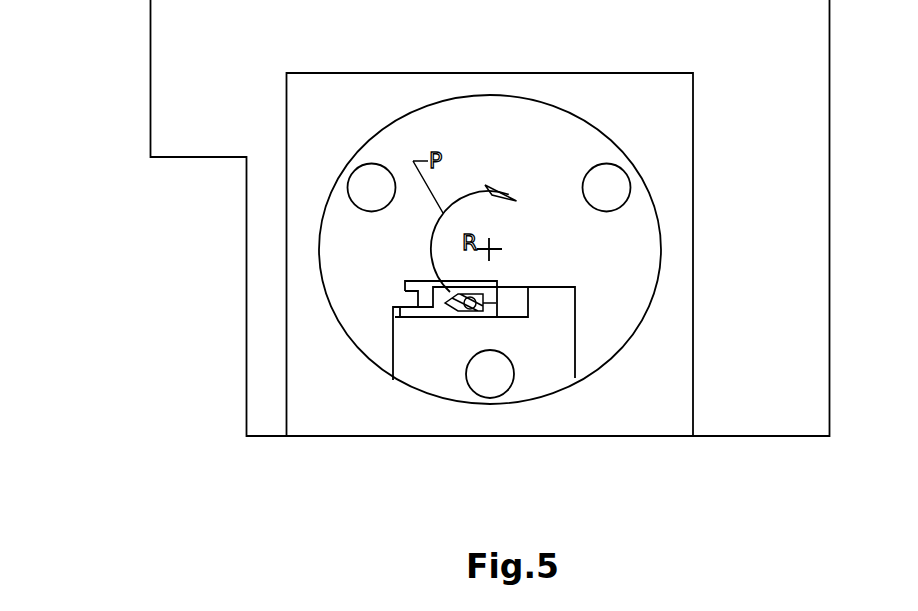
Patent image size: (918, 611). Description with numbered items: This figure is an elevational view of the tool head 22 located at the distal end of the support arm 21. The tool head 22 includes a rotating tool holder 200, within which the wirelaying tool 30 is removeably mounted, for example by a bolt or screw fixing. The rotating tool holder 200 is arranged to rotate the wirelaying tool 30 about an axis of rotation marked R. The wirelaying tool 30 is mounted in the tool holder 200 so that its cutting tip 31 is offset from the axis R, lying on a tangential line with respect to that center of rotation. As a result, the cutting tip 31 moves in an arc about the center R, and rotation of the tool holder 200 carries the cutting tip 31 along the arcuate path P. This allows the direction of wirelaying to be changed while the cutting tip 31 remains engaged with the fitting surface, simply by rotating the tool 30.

The support arm 21 is at (193, 107).
The tool head 22 is at (268, 266).
The rotating tool holder 200 is at (400, 297).
The cutting tip 31 is at (454, 308).
The wirelaying tool 30 is at (482, 307).